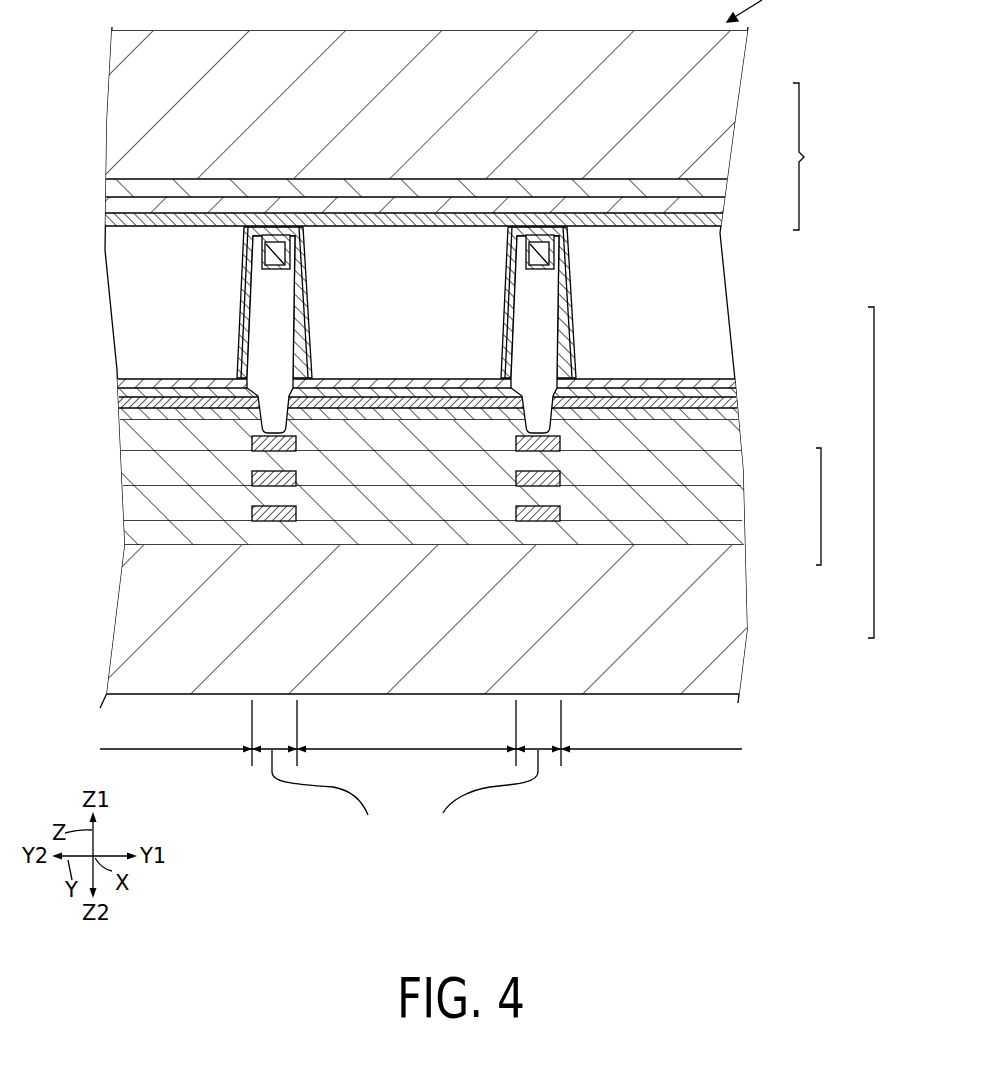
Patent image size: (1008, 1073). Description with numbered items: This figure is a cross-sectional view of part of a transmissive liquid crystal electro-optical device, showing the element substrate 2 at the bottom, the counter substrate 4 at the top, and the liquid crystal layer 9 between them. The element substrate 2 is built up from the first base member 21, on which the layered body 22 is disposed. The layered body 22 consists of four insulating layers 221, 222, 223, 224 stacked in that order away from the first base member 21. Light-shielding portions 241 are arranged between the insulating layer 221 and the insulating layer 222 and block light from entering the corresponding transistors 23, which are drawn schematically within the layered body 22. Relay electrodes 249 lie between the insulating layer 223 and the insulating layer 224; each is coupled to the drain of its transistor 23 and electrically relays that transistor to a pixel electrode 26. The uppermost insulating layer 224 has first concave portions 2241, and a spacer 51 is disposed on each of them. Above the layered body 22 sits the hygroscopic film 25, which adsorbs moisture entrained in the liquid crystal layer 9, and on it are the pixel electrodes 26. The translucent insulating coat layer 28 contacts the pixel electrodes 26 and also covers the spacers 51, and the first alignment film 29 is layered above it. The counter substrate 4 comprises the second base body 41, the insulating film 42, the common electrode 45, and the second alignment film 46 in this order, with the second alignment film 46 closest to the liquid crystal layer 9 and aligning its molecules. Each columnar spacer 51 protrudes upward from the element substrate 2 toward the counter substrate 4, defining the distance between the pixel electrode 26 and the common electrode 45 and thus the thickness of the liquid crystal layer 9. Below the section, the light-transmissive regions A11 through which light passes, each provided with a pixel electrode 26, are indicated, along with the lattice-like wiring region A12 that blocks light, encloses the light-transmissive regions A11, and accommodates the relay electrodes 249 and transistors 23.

The element substrate 2 is at (886, 472).
The first base member 21 is at (723, 630).
The layered body 22 is at (843, 506).
The insulating layer 221 is at (713, 544).
The insulating layer 222 is at (707, 516).
The insulating layer 223 is at (707, 484).
The insulating layer 224 is at (707, 448).
The first concave portion 2241 is at (243, 383).
The transistor 23 is at (250, 482).
The light-shielding portion 241 is at (250, 514).
The relay electrode 249 is at (250, 445).
The hygroscopic film 25 is at (713, 418).
The pixel electrode 26 is at (718, 400).
The coat layer 28 is at (578, 368).
The first alignment film 29 is at (578, 333).
The counter substrate 4 is at (813, 156).
The second base body 41 is at (688, 102).
The insulating film 42 is at (690, 168).
The common electrode 45 is at (688, 198).
The second alignment film 46 is at (688, 223).
The spacer 51 is at (278, 308).
The liquid crystal layer 9 is at (678, 293).
The light-transmissive region A11 is at (421, 740).
The wiring region A12 is at (405, 786).